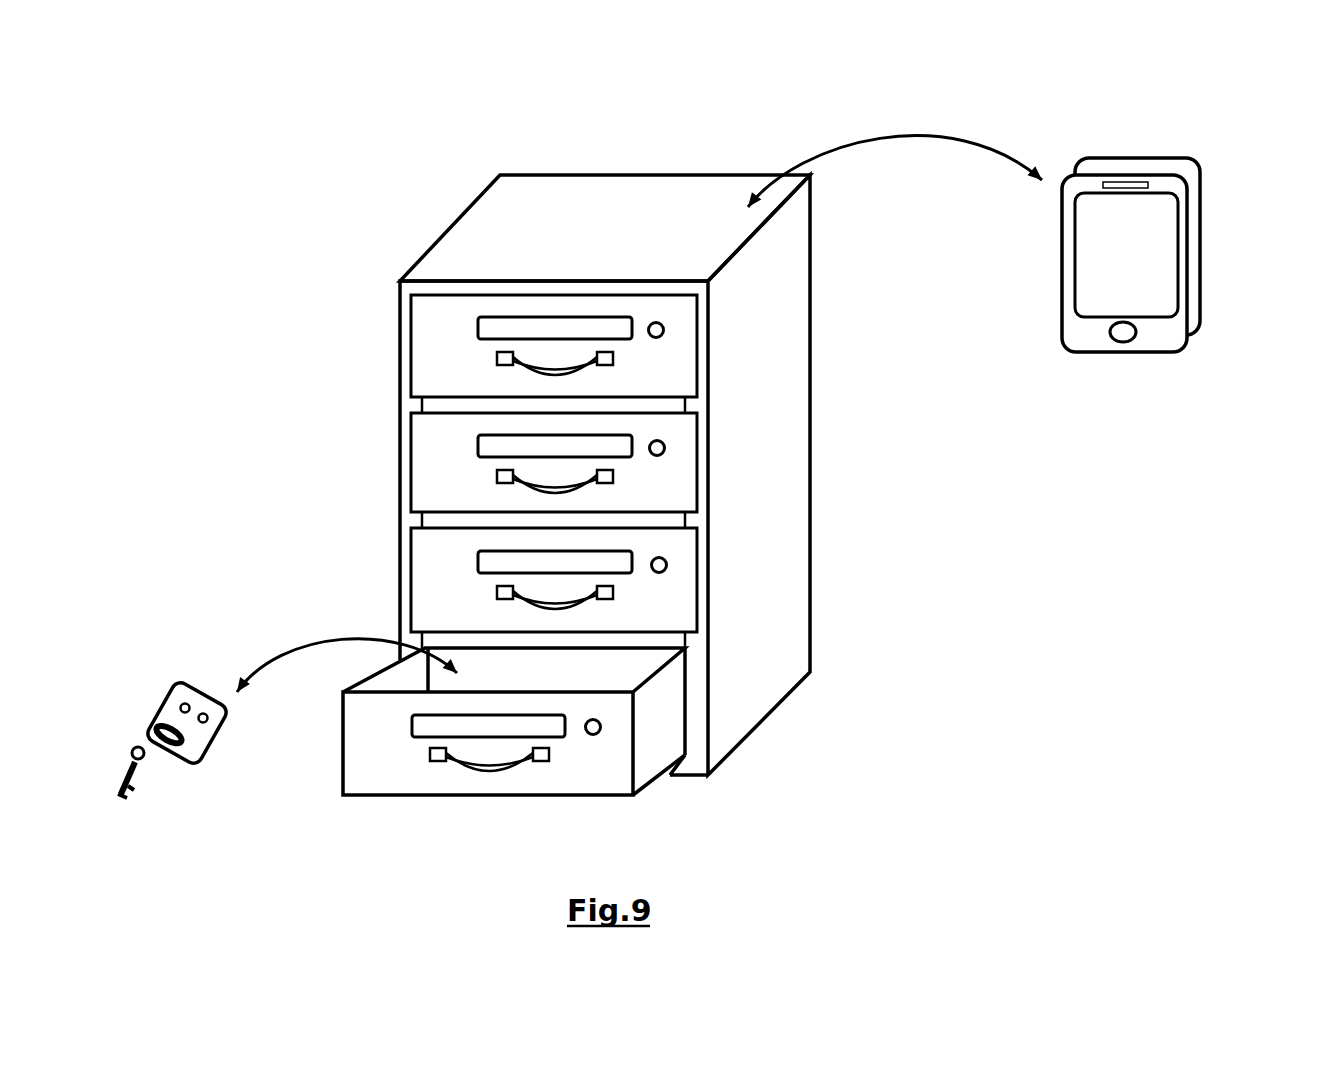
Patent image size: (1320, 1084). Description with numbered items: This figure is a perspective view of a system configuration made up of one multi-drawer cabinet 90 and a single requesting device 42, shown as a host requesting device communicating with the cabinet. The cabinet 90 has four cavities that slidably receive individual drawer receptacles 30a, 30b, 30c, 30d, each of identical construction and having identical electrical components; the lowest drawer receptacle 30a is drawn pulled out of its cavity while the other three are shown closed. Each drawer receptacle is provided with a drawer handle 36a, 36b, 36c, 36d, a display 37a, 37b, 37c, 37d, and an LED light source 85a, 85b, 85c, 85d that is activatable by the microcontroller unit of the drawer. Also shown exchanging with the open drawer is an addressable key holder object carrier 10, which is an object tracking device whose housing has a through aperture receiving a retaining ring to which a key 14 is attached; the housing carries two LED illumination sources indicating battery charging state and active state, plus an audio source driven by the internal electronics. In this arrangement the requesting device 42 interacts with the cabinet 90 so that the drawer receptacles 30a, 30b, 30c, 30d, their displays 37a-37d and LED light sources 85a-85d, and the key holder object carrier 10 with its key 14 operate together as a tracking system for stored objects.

The key holder object carrier 10 is at (182, 703).
The key 14 is at (133, 785).
The drawer receptacle 30a is at (658, 728).
The drawer receptacle 30b is at (657, 607).
The drawer receptacle 30c is at (658, 482).
The drawer receptacle 30d is at (653, 365).
The drawer handle 36a is at (470, 772).
The drawer handle 36b is at (520, 607).
The drawer handle 36c is at (520, 490).
The drawer handle 36d is at (520, 377).
The display 37a is at (430, 727).
The display 37b is at (490, 565).
The display 37c is at (497, 445).
The display 37d is at (500, 330).
The requesting device 42 is at (1148, 250).
The LED light source 85a is at (597, 734).
The LED light source 85b is at (668, 563).
The LED light source 85c is at (665, 443).
The LED light source 85d is at (664, 324).
The multi-drawer cabinet 90 is at (758, 490).